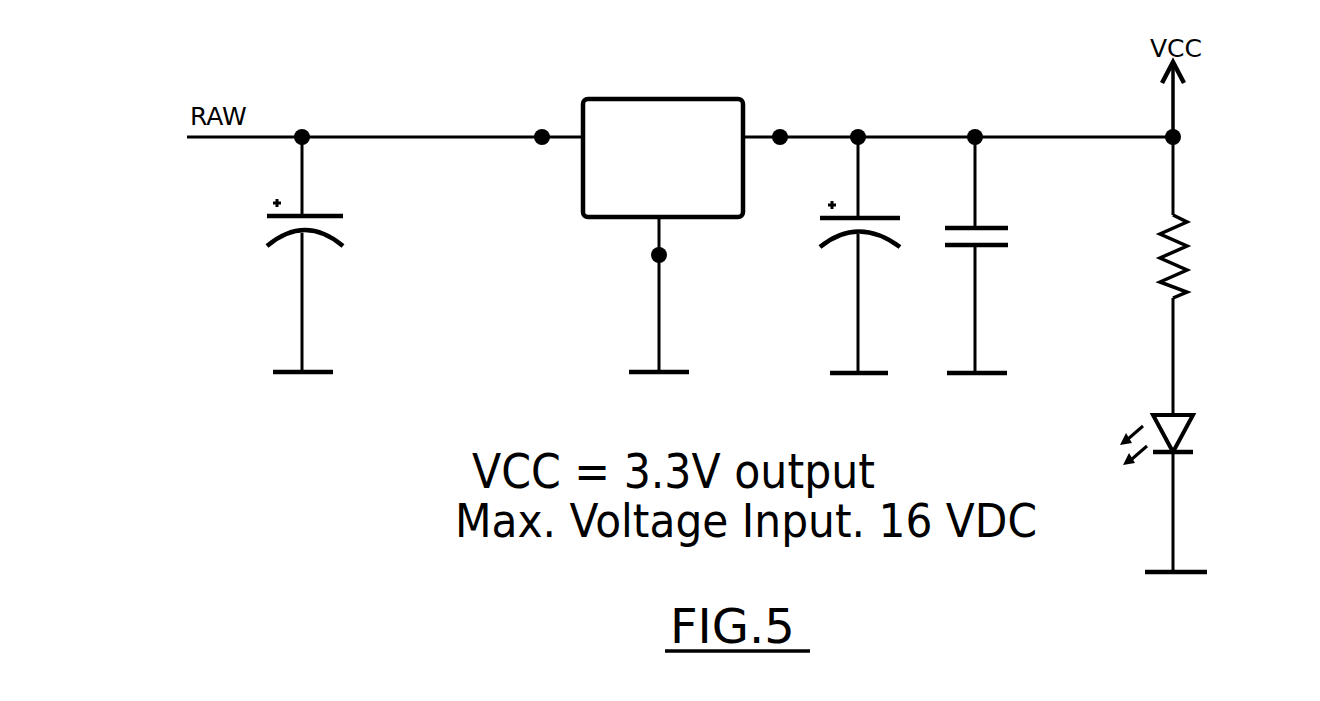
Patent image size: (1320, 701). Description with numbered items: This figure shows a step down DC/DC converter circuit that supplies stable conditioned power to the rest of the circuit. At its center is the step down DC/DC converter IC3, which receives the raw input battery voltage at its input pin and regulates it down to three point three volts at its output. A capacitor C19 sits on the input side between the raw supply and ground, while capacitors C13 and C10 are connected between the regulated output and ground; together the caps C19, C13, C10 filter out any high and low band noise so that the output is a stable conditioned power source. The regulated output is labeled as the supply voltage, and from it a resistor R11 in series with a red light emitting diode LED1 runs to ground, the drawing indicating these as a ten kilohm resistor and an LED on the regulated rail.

The capacitor C19 is at (329, 271).
The step down DC/DC converter IC3 is at (704, 212).
The capacitor C13 is at (877, 272).
The capacitor C10 is at (1010, 272).
The 10K current limiting resistor R11 is at (1173, 276).
The red light emitting diode LED1 is at (1188, 503).